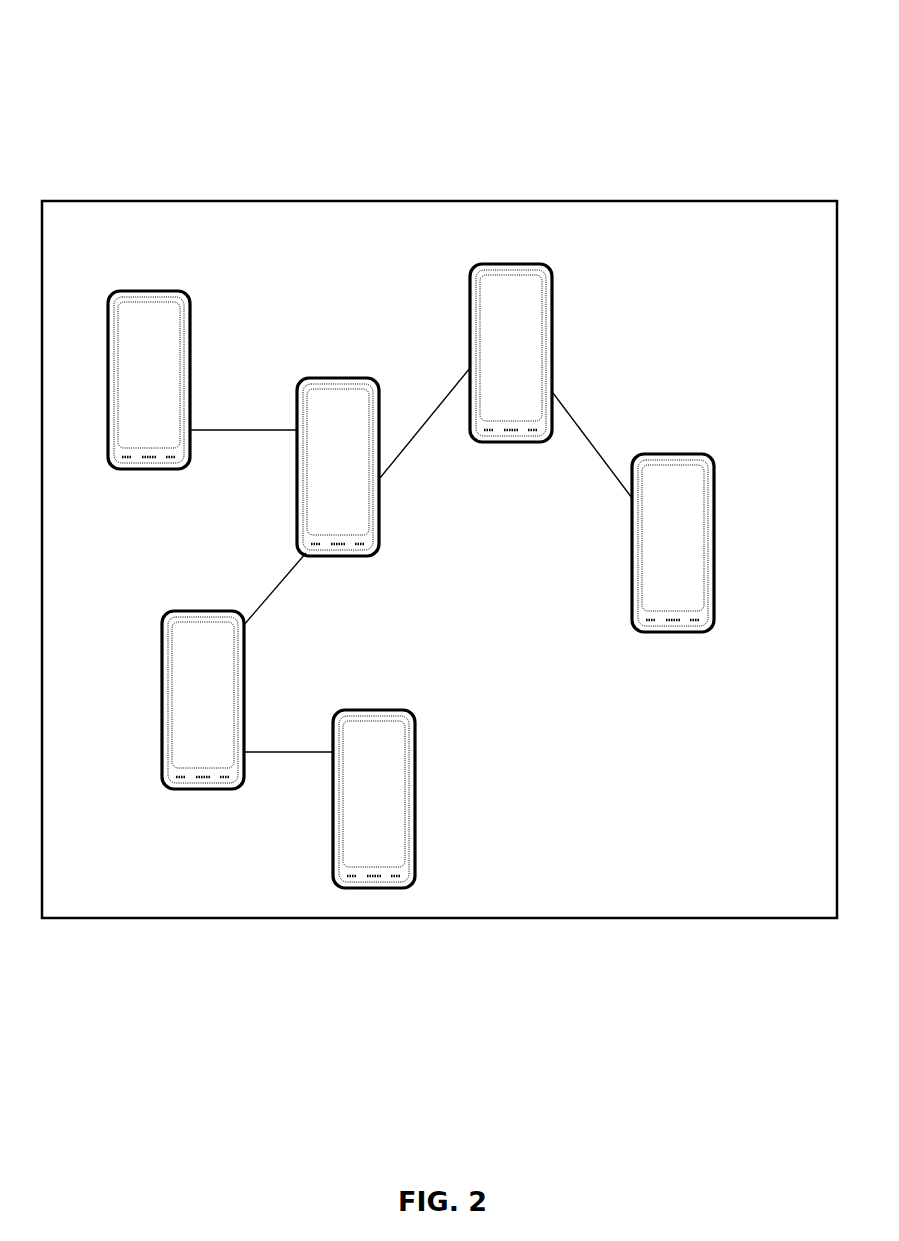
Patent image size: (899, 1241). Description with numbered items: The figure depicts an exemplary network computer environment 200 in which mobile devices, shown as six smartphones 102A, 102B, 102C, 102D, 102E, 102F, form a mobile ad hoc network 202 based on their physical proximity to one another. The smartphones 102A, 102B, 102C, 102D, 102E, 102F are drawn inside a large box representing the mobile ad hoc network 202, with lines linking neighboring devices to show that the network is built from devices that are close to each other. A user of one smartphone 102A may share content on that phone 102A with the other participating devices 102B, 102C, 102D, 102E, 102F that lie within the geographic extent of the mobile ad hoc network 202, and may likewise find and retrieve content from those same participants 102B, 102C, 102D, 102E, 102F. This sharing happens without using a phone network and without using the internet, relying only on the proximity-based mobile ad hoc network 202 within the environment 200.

The network computer environment 200 is at (98, 45).
The mobile ad hoc network 202 is at (774, 893).
The smartphone 102A is at (172, 432).
The smartphone 102B is at (361, 519).
The smartphone 102C is at (536, 405).
The smartphone 102D is at (697, 595).
The smartphone 102E is at (226, 752).
The smartphone 102F is at (396, 851).